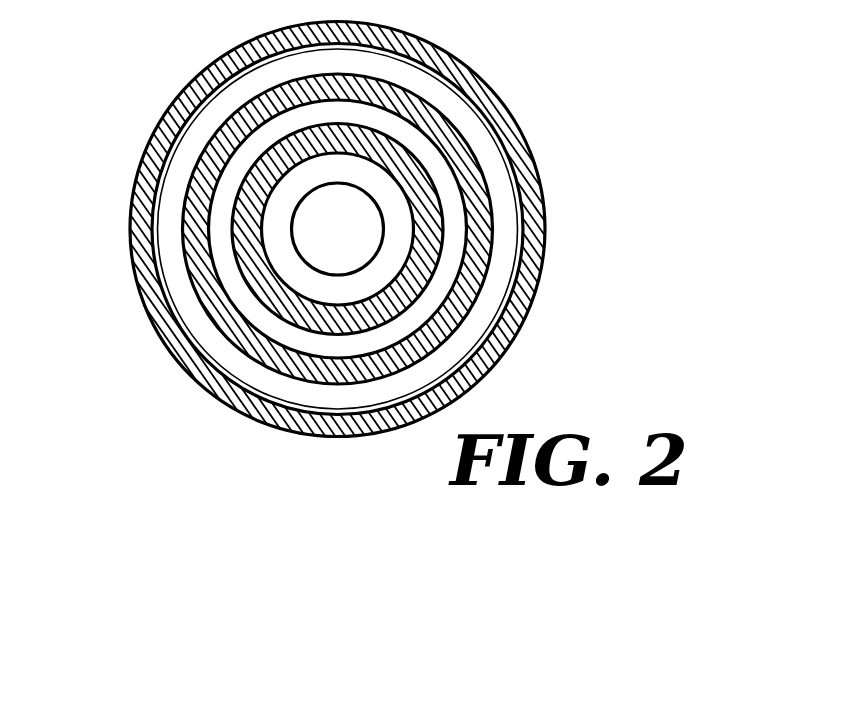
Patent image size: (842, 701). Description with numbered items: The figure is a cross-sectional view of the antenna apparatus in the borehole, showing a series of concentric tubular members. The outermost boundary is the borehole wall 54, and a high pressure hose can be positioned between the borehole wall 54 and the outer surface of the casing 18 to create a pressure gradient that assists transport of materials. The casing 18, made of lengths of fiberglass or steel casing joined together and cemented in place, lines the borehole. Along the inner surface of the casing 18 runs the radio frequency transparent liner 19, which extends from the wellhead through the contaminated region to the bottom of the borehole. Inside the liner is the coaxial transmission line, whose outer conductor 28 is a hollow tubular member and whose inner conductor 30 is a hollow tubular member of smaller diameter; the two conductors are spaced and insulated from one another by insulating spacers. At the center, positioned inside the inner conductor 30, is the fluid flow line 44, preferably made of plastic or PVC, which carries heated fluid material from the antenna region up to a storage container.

The borehole wall 54 is at (540, 165).
The casing 18 is at (530, 242).
The radio frequency transparent liner 19 is at (467, 344).
The outer conductor 28 is at (428, 112).
The inner conductor 30 is at (270, 300).
The fluid flow line 44 is at (325, 232).